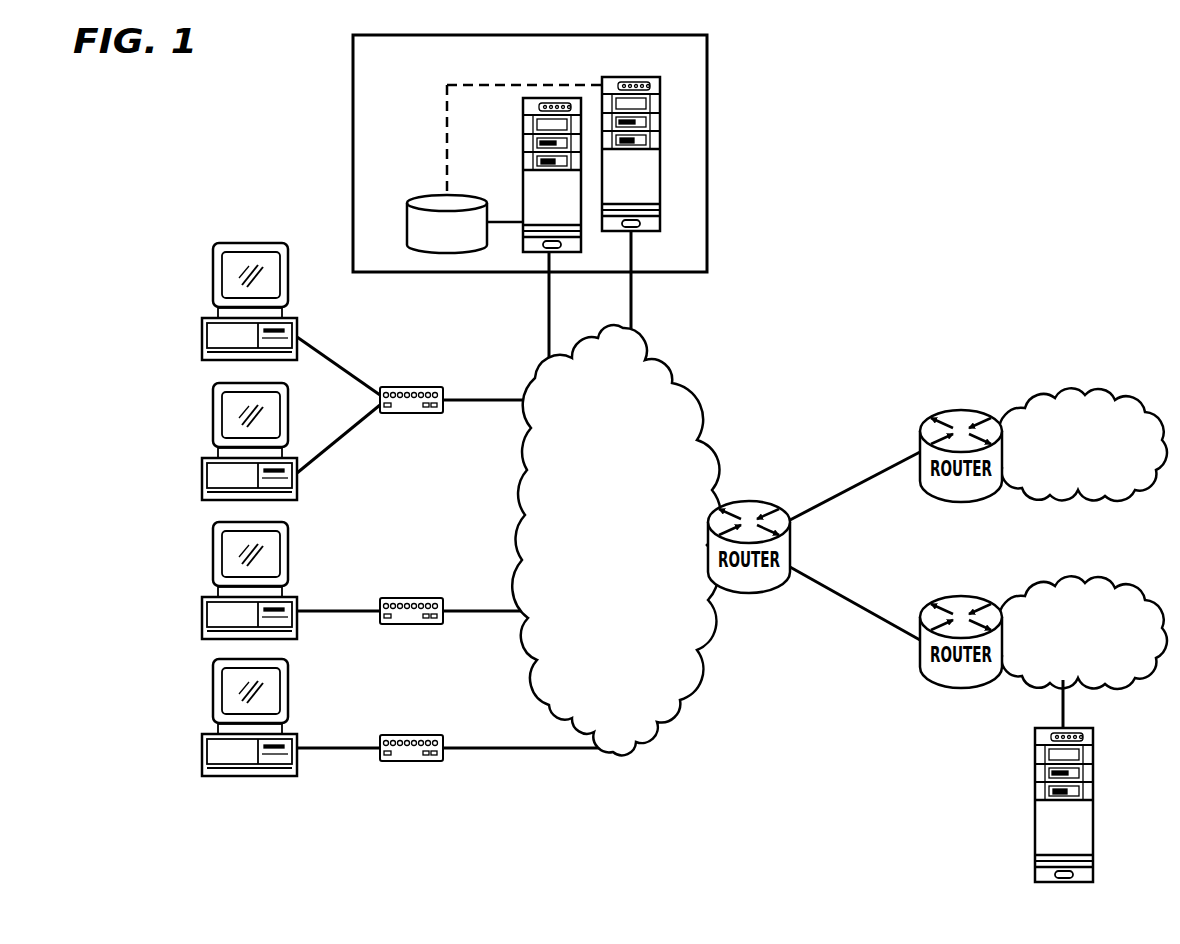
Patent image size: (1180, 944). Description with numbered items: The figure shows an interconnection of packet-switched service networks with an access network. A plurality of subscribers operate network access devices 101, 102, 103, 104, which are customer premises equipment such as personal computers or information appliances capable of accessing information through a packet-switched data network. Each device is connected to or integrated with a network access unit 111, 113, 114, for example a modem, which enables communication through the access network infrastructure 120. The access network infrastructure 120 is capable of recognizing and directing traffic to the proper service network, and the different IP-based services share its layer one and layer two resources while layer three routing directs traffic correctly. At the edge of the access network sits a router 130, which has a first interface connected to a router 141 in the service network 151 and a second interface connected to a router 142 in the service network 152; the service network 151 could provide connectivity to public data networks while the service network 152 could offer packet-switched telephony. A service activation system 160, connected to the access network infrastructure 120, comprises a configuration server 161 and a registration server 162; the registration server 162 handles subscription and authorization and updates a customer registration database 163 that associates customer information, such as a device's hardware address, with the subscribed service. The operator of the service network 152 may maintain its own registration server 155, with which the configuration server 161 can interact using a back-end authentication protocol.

The network access device 101 is at (213, 274).
The network access device 102 is at (212, 416).
The network access device 103 is at (212, 551).
The network access device 104 is at (212, 689).
The network access unit 111 is at (418, 385).
The network access unit 113 is at (418, 597).
The network access unit 114 is at (418, 733).
The access network infrastructure 120 is at (528, 470).
The router 130 is at (750, 500).
The router 141 is at (964, 407).
The router 142 is at (964, 595).
The service network 151 is at (1071, 392).
The service network 152 is at (1071, 580).
The registration server 155 is at (1095, 811).
The service activation system 160 is at (353, 48).
The configuration server 161 is at (634, 78).
The registration server 162 is at (523, 168).
The customer registration database 163 is at (407, 222).